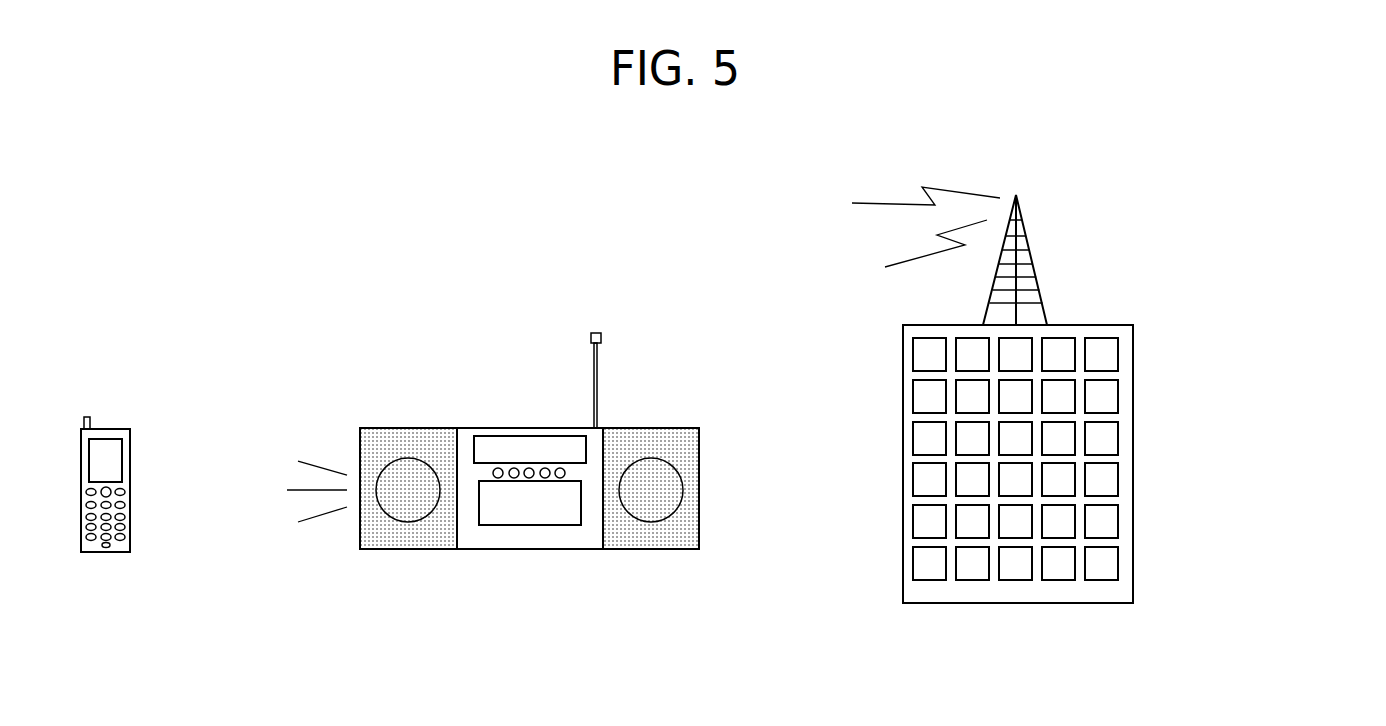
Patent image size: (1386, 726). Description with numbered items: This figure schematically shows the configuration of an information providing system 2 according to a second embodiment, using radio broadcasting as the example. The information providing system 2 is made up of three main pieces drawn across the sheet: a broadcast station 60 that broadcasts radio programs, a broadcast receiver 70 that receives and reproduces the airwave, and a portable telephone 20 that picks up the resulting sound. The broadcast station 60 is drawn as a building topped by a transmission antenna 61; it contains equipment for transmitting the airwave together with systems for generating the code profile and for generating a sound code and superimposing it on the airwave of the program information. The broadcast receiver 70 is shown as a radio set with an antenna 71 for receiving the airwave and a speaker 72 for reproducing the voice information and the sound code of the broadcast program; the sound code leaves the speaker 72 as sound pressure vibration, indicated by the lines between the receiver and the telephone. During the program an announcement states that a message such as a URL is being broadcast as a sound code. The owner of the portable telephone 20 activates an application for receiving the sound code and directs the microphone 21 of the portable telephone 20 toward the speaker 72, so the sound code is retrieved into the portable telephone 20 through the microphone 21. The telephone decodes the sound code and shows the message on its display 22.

The information providing system 2 is at (762, 180).
The portable telephone 20 is at (111, 422).
The microphone 21 is at (109, 548).
The display 22 is at (113, 460).
The broadcast station 60 is at (1032, 612).
The transmission antenna 61 is at (1025, 270).
The broadcast receiver 70 is at (446, 420).
The antenna 71 is at (597, 392).
The speaker 72 is at (413, 538).